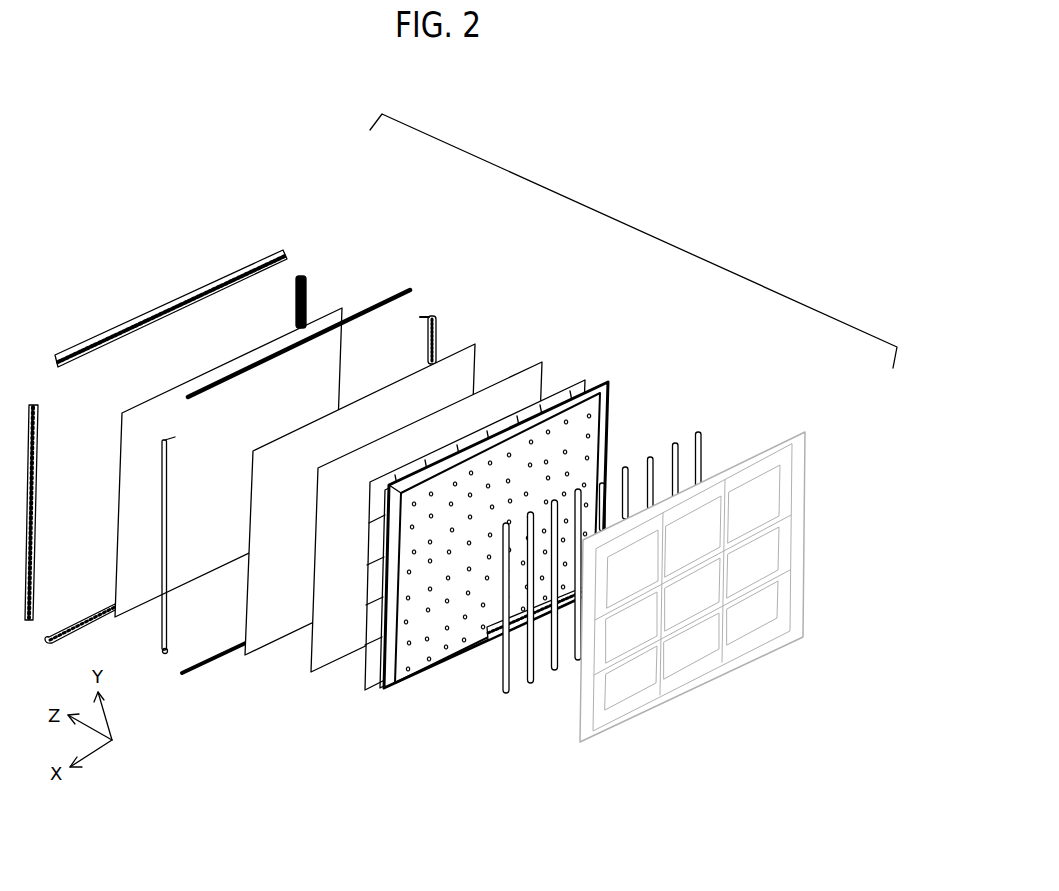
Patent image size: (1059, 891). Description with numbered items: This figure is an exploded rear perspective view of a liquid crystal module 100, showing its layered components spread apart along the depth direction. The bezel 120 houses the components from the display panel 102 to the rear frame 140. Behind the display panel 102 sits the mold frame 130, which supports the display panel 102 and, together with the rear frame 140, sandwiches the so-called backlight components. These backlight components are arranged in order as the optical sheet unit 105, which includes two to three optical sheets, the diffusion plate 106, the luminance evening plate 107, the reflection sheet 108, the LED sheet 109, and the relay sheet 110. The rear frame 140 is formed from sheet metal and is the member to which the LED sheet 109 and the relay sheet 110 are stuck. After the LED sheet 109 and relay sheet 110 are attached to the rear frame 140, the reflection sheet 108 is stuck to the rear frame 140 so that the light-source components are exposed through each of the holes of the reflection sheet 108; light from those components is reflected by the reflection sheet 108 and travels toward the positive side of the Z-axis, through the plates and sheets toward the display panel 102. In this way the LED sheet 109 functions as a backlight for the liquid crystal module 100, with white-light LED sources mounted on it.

The liquid crystal module 100 is at (638, 229).
The display panel 102 is at (325, 313).
The optical sheet unit 105 is at (448, 352).
The diffusion plate 106 is at (512, 380).
The luminance evening plate 107 is at (552, 380).
The reflection sheet 108 is at (583, 383).
The LED sheet 109 is at (673, 443).
The relay sheet 110 is at (517, 633).
The bezel 120 is at (248, 257).
The mold frame 130 is at (433, 333).
The rear frame 140 is at (737, 475).